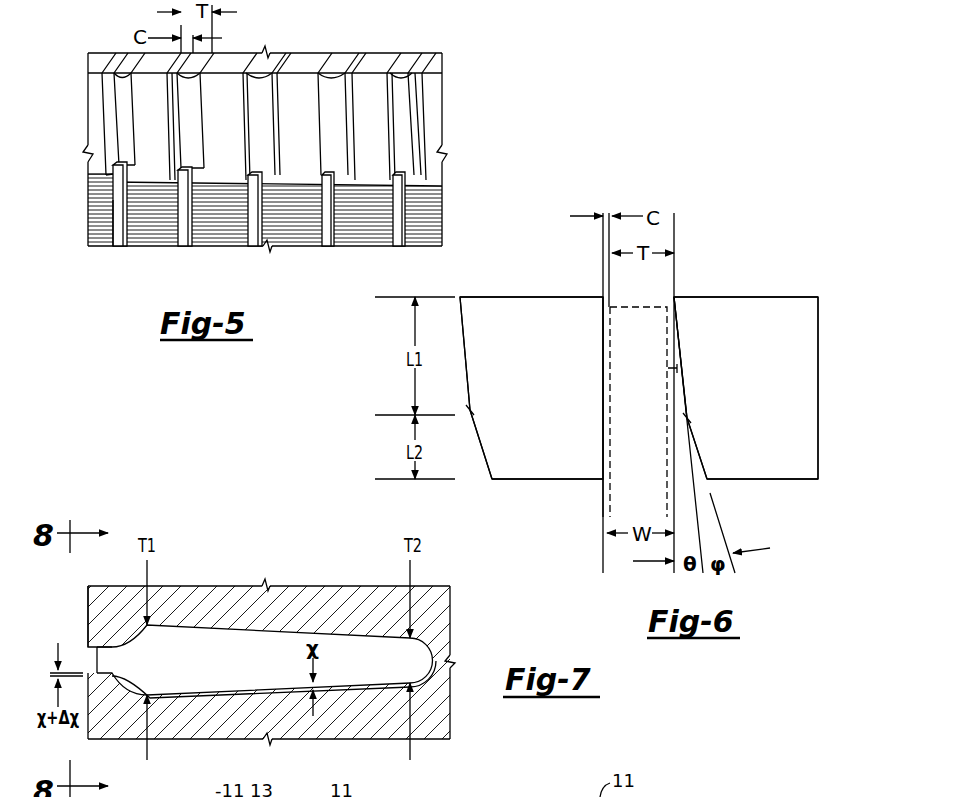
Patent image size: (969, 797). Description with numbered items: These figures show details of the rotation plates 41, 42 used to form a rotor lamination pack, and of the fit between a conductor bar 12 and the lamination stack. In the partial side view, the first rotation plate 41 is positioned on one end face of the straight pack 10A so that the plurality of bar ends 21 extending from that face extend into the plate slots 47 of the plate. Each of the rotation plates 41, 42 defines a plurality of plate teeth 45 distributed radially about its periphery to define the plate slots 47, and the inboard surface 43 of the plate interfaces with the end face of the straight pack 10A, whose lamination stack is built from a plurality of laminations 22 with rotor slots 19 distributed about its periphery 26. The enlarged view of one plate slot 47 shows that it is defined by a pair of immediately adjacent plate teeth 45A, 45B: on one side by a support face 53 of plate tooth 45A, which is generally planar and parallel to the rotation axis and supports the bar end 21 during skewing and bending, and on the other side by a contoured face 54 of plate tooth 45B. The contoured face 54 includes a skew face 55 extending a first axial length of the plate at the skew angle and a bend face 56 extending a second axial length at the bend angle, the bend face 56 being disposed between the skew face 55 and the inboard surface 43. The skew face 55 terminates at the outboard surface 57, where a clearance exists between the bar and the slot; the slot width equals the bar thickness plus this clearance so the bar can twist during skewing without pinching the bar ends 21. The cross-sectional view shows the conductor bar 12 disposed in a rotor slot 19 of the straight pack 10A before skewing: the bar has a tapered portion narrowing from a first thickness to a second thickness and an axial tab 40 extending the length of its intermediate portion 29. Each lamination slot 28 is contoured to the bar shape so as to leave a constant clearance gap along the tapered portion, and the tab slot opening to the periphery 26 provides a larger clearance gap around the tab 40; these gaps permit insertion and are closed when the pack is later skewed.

In FIG. 5, the straight pack 10A is at (72, 220).
In FIG. 5, the conductor bar 12 is at (254, 62).
In FIG. 6, the conductor bar 12 is at (606, 406).
In FIG. 7, the conductor bar 12 is at (298, 624).
In FIG. 5, the rotor slot 19 is at (118, 218).
In FIG. 7, the rotor slot 19 is at (358, 684).
In FIG. 5, the bar end 21 is at (112, 98).
In FIG. 6, the bar end 21 is at (680, 367).
In FIG. 5, the lamination 22 is at (360, 228).
In FIG. 7, the lamination 22 is at (222, 586).
In FIG. 5, the periphery 26 is at (216, 222).
In FIG. 7, the periphery 26 is at (88, 590).
In FIG. 7, the lamination slot 28 is at (95, 655).
In FIG. 6, the intermediate portion 29 is at (607, 505).
In FIG. 5, the axial tab 40 is at (178, 168).
In FIG. 7, the axial tab 40 is at (103, 646).
In FIG. 5, the first rotation plate 41 is at (319, 149).
In FIG. 6, the first rotation plate 41 is at (716, 392).
In FIG. 5, the second rotation plate 42 is at (484, 73).
In FIG. 6, the second rotation plate 42 is at (803, 273).
In FIG. 6, the inboard surface 43 is at (525, 480).
In FIG. 5, the plate tooth 45 is at (303, 60).
In FIG. 6, the plate tooth 45A is at (540, 303).
In FIG. 6, the plate tooth 45B is at (742, 303).
In FIG. 5, the plate slot 47 is at (108, 108).
In FIG. 6, the support face 53 is at (607, 356).
In FIG. 6, the contoured face 54 is at (457, 378).
In FIG. 6, the skew face 55 is at (462, 330).
In FIG. 6, the bend face 56 is at (478, 452).
In FIG. 6, the outboard surface 57 is at (497, 297).